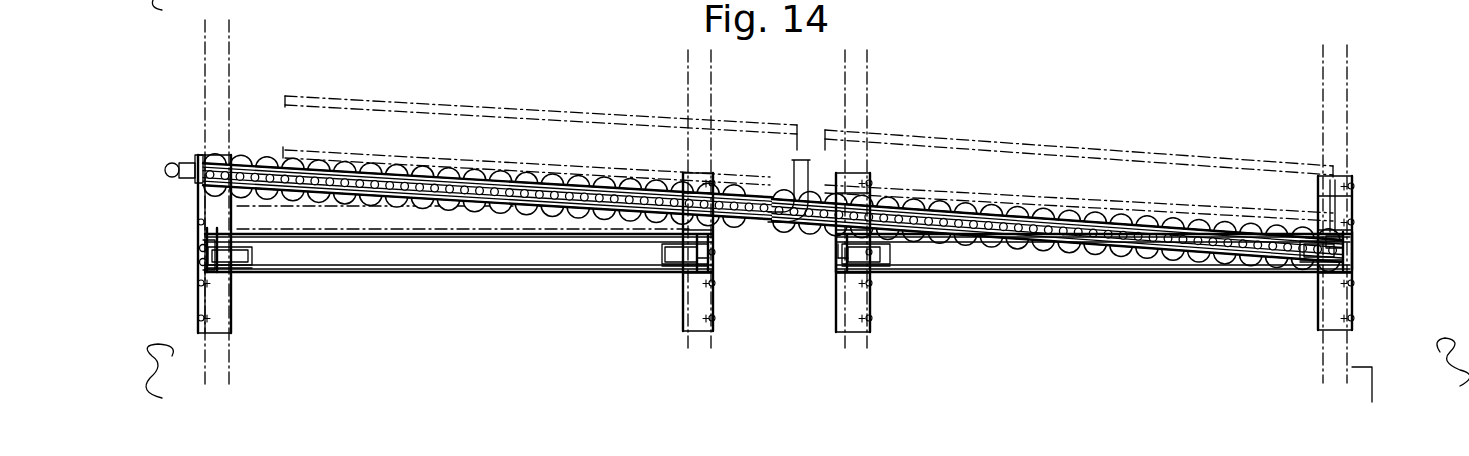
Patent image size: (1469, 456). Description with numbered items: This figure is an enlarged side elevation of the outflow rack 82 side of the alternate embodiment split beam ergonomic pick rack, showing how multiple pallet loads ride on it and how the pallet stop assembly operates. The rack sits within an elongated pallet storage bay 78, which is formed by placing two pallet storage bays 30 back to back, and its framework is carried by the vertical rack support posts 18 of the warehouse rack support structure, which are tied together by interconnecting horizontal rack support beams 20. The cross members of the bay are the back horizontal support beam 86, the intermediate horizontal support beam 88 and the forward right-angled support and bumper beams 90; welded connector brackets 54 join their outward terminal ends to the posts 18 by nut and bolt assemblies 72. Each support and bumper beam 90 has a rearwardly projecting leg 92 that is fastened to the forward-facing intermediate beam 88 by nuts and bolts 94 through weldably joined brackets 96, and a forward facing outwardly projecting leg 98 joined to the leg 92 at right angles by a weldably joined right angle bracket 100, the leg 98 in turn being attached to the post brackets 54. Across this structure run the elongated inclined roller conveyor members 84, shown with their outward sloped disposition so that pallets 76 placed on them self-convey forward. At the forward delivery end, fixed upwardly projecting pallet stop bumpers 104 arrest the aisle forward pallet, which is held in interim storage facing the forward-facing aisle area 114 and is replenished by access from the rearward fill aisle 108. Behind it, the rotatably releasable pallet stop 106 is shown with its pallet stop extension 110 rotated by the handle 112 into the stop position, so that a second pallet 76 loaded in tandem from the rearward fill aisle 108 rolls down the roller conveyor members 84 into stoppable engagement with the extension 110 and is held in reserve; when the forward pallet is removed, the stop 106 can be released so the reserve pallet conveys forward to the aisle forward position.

The vertical rack support post 18 is at (229, 67).
The horizontal rack support beam 20 is at (357, 230).
The pallet storage bay 30 is at (985, 60).
The connector bracket 54 is at (714, 298).
The nut and bolt assembly 72 is at (203, 222).
The pallet 76 is at (540, 115).
The elongated pallet storage bay 78 is at (1088, 90).
The inclined roller conveyor pallet storage support outflow rack 82 is at (810, 101).
The inclined roller conveyor member 84 is at (900, 197).
The back horizontal support beam 86 is at (1352, 246).
The intermediate horizontal support beam 88 is at (712, 262).
The right-angled support and bumper beam 90 is at (205, 262).
The rearwardly projecting parallel leg 92 is at (448, 272).
The nut and bolt 94 is at (205, 248).
The weldably joined bracket 96 is at (248, 266).
The forward facing outwardly projecting leg 98 is at (215, 270).
The right angle bracket 100 is at (253, 255).
The pallet stop bumper 104 is at (1333, 187).
The rotatably releasable pallet stop 106 is at (527, 205).
The rearward fill aisle 108 is at (1410, 370).
The pallet stop extension 110 is at (795, 168).
The handle 112 is at (180, 164).
The forward-facing aisle area 114 is at (172, 206).